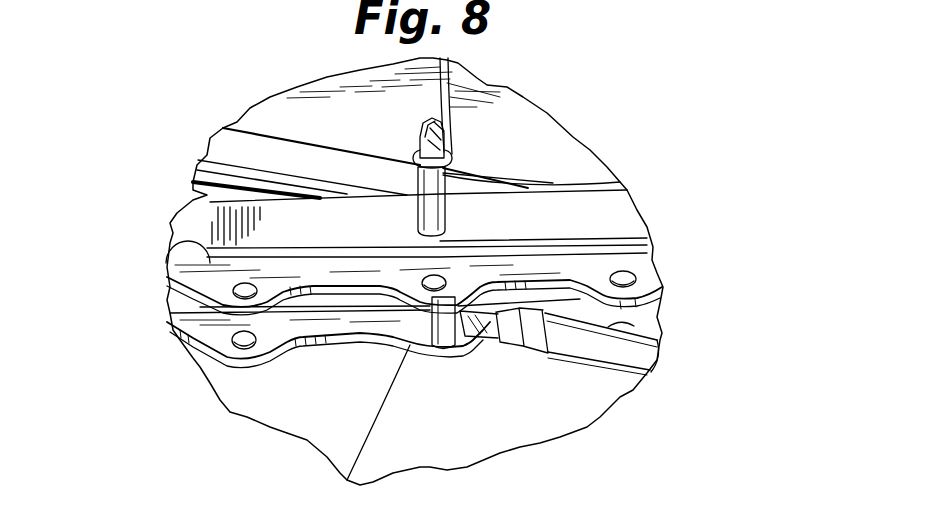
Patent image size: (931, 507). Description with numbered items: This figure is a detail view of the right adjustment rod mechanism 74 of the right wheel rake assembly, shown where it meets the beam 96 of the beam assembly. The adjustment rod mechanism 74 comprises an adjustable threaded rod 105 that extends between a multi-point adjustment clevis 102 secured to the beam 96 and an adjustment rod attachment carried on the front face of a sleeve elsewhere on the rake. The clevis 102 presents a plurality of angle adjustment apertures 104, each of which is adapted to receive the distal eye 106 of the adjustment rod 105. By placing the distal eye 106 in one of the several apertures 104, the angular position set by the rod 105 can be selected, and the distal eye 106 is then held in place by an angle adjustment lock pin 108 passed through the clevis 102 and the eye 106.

The right adjustment rod mechanism 74 is at (591, 365).
The beam 96 is at (207, 205).
The multi-point adjustment clevis 102 is at (178, 244).
The angle adjustment apertures 104 is at (168, 305).
The adjustable threaded rod 105 is at (630, 346).
The distal eye 106 is at (385, 336).
The angle adjustment lock pin 108 is at (441, 157).